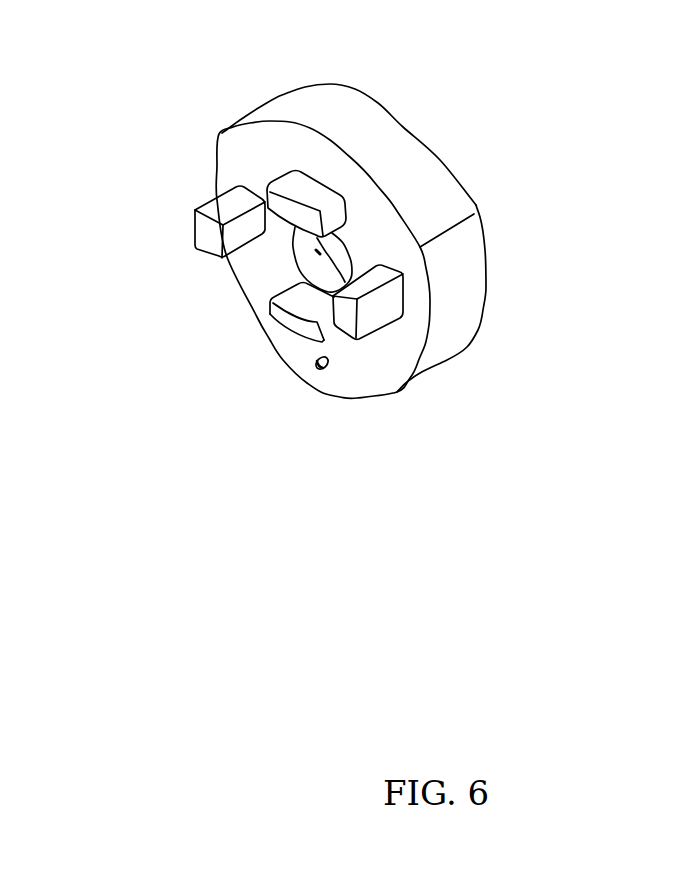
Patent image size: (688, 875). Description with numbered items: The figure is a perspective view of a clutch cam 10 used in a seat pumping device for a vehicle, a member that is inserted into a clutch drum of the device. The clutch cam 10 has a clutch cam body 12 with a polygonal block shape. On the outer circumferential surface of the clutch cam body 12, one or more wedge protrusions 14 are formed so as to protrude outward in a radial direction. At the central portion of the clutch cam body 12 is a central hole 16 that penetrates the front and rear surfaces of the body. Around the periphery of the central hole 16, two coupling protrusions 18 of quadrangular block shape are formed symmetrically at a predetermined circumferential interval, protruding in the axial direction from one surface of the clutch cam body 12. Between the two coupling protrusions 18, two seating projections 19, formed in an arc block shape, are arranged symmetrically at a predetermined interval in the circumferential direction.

The clutch cam 10 is at (422, 118).
The clutch cam body 12 is at (345, 372).
The wedge protrusion 14 is at (445, 208).
The central hole 16 is at (302, 270).
The coupling protrusion 18 is at (194, 233).
The seating projection 19 is at (308, 187).